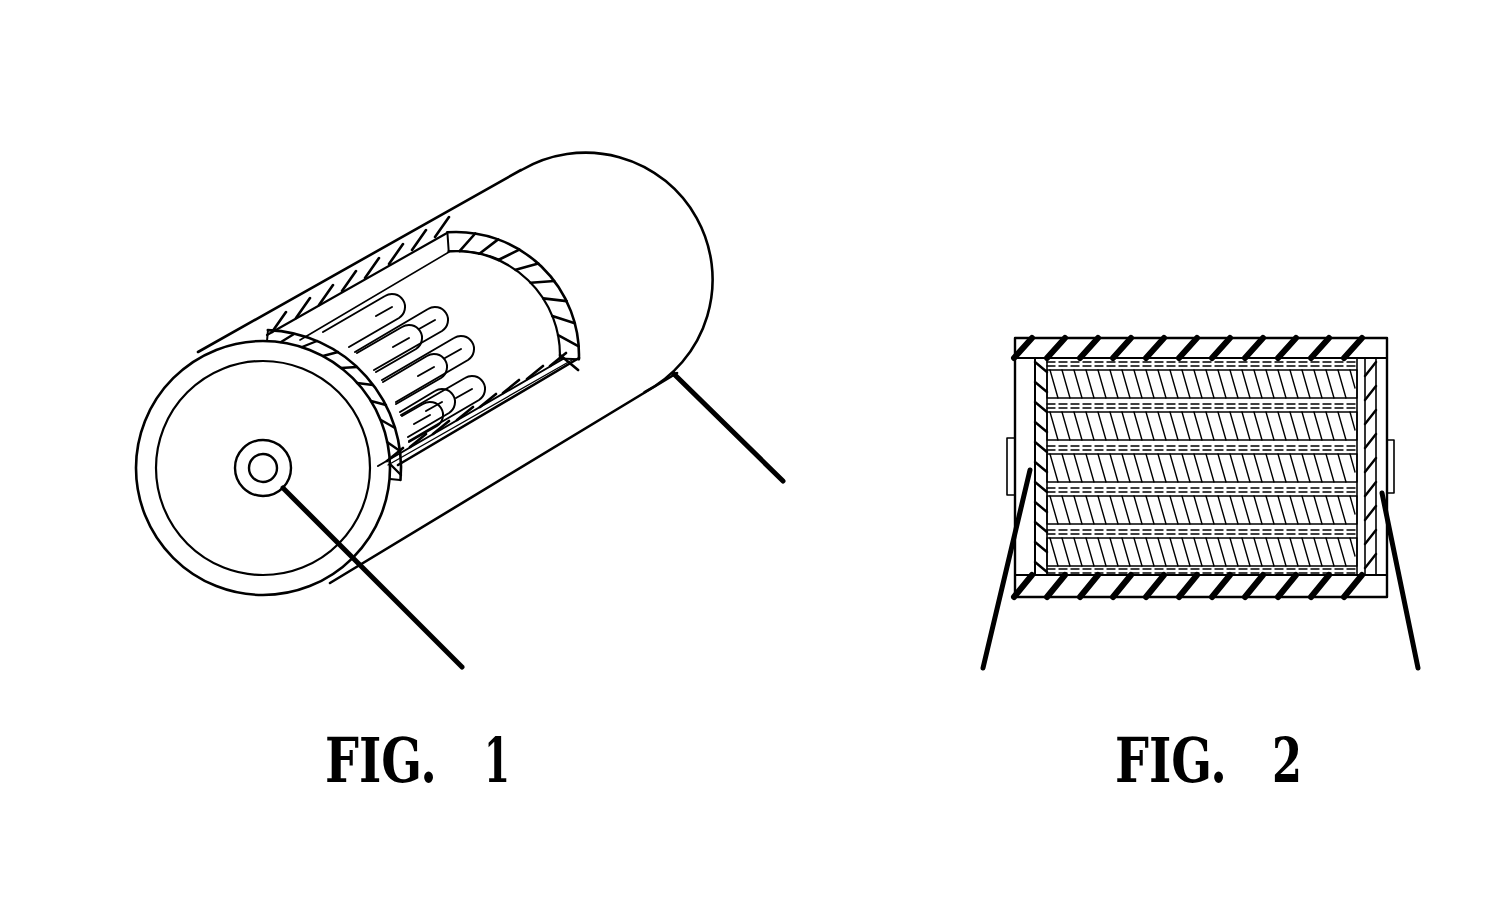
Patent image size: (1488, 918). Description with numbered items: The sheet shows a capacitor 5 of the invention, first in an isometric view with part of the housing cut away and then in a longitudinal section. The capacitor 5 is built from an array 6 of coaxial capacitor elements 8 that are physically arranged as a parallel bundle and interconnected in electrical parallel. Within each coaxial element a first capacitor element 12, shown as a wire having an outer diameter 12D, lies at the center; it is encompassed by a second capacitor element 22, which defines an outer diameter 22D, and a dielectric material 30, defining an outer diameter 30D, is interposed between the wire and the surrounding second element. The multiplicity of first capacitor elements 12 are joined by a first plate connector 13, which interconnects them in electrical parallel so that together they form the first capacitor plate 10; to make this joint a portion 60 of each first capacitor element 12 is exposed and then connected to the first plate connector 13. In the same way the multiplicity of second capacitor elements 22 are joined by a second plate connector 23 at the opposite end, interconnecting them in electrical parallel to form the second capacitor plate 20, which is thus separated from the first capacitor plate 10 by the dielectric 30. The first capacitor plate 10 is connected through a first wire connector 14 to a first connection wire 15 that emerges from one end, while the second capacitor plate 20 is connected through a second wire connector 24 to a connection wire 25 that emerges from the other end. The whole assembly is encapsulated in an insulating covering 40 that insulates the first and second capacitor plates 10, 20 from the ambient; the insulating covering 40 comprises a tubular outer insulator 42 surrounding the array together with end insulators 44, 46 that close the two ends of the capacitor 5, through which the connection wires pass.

In FIG. 1, the capacitor 5 is at (752, 184).
In FIG. 2, the capacitor 5 is at (1326, 188).
In FIG. 1, the array 6 is at (430, 380).
In FIG. 2, the array 6 is at (1067, 502).
In FIG. 1, the coaxial capacitor elements 8 is at (470, 358).
In FIG. 2, the coaxial capacitor elements 8 is at (1063, 462).
In FIG. 1, the first capacitor plate 10 is at (400, 413).
In FIG. 1, the first capacitor elements 12 is at (445, 410).
In FIG. 2, the first capacitor elements 12 is at (1100, 400).
In FIG. 1, the outer diameter 12D is at (418, 415).
In FIG. 2, the outer diameter 12D is at (1105, 370).
In FIG. 1, the first plate connector 13 is at (275, 320).
In FIG. 2, the first plate connector 13 is at (1032, 340).
In FIG. 1, the first wire connector 14 is at (262, 478).
In FIG. 2, the first wire connector 14 is at (1040, 468).
In FIG. 1, the first connection wire 15 is at (462, 667).
In FIG. 2, the first connection wire 15 is at (995, 649).
In FIG. 1, the second capacitor plate 20 is at (503, 290).
In FIG. 1, the second capacitor elements 22 is at (470, 290).
In FIG. 2, the second capacitor elements 22 is at (1310, 365).
In FIG. 1, the outer diameter 22D is at (453, 302).
In FIG. 2, the outer diameter 22D is at (1255, 365).
In FIG. 1, the second plate connector 23 is at (485, 277).
In FIG. 2, the second plate connector 23 is at (1345, 362).
In FIG. 2, the second wire connector 24 is at (1390, 473).
In FIG. 1, the connection wire 25 is at (770, 480).
In FIG. 2, the connection wire 25 is at (1405, 655).
In FIG. 1, the dielectric materials 30 is at (442, 337).
In FIG. 2, the dielectric materials 30 is at (1162, 400).
In FIG. 1, the outer diameter 30D is at (325, 290).
In FIG. 2, the outer diameter 30D is at (1190, 357).
In FIG. 1, the insulating covering 40 is at (551, 190).
In FIG. 2, the insulating covering 40 is at (1387, 338).
In FIG. 1, the outer insulator 42 is at (668, 308).
In FIG. 2, the outer insulator 42 is at (1220, 338).
In FIG. 1, the end insulator 44 is at (222, 427).
In FIG. 2, the end insulator 44 is at (1028, 371).
In FIG. 1, the end insulator 46 is at (712, 248).
In FIG. 2, the end insulator 46 is at (1383, 387).
In FIG. 2, the exposed portion 60 is at (1043, 410).